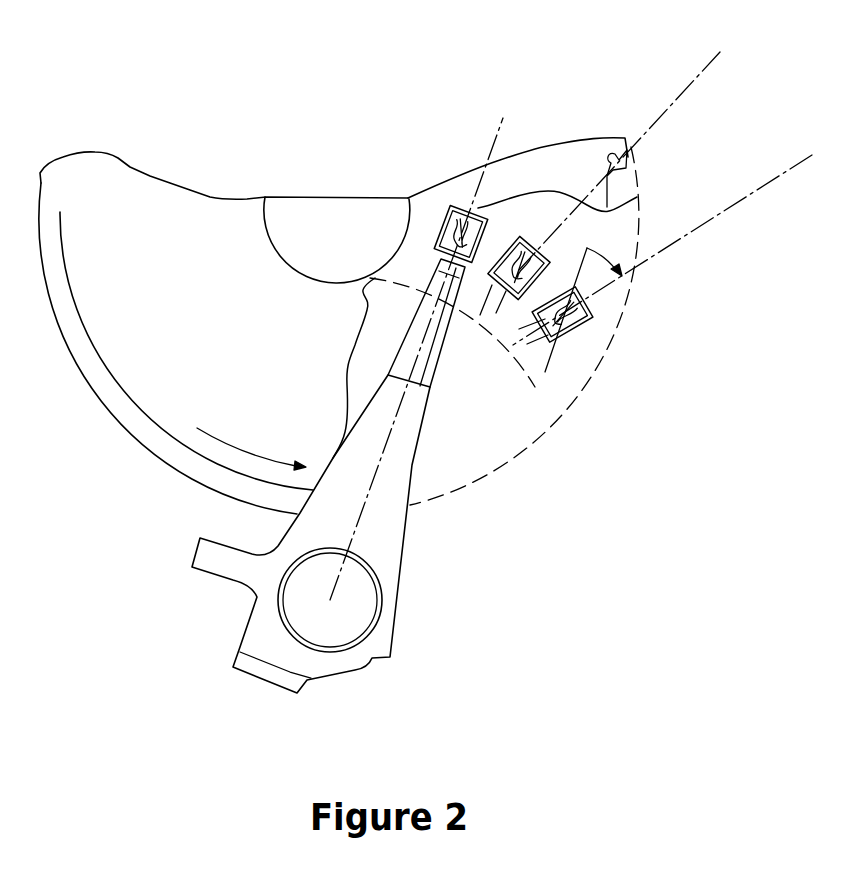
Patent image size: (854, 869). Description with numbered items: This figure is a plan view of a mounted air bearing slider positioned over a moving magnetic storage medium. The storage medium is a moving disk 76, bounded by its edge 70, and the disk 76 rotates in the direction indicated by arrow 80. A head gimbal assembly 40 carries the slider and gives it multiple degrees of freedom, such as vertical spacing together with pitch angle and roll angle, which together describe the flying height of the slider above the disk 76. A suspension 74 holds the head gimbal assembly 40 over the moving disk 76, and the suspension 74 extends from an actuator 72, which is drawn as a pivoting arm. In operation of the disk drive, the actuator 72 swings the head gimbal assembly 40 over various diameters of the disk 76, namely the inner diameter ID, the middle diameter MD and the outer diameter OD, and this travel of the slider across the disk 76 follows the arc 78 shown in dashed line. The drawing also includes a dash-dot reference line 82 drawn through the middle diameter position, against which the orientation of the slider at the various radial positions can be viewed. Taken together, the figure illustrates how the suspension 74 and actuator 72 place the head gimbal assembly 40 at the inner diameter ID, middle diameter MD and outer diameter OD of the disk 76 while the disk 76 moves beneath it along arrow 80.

The head gimbal assembly 40 is at (517, 190).
The edge 70 is at (124, 429).
The actuator 72 is at (398, 613).
The suspension 74 is at (439, 361).
The disk 76 is at (190, 333).
The arc 78 is at (521, 368).
The arrow 80 is at (254, 455).
The reference axis line 82 is at (662, 182).
The inner diameter ID is at (446, 216).
The middle diameter MD is at (547, 257).
The outer diameter OD is at (594, 316).